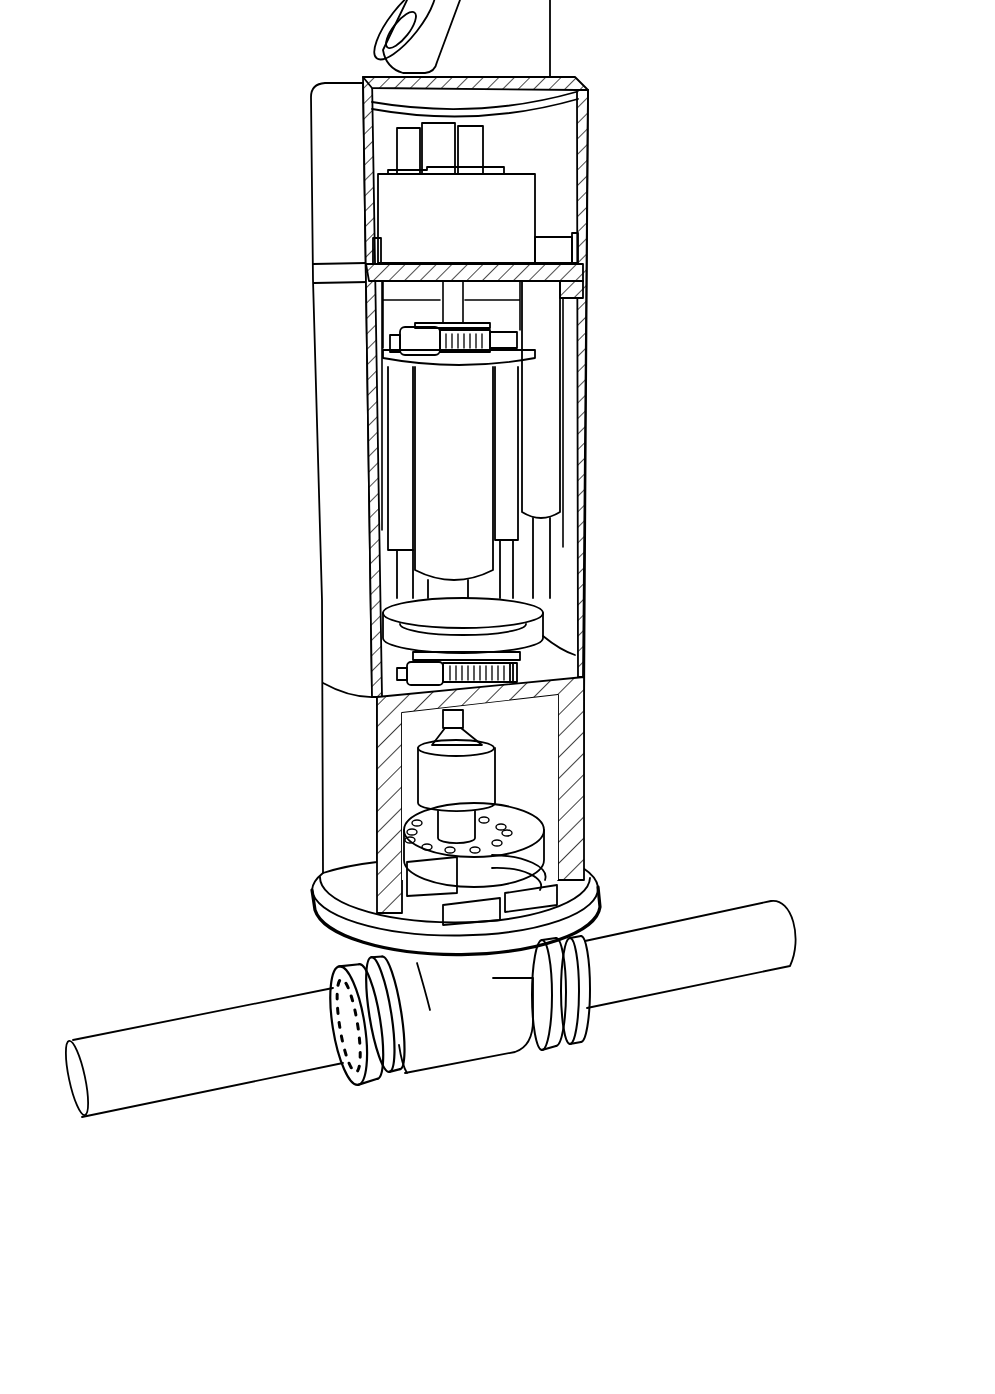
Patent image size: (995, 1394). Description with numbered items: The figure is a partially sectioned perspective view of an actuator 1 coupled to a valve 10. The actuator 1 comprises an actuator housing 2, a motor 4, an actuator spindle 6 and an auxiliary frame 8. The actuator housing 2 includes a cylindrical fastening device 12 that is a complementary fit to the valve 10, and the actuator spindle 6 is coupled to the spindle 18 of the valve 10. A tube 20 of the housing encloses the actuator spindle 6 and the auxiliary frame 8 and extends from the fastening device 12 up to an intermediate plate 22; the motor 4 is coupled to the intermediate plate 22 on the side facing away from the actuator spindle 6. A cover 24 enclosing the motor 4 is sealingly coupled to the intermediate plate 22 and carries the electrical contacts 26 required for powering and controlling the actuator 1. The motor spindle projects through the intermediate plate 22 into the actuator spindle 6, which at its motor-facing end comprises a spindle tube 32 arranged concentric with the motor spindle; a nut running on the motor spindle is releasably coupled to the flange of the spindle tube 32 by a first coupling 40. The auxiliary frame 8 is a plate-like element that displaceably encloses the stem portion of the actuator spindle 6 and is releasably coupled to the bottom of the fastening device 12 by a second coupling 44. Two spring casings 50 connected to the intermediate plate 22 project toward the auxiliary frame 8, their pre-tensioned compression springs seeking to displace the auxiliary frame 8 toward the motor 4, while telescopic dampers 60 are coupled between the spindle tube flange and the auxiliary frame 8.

The actuator 1 is at (287, 490).
The actuator housing 2 is at (605, 584).
The motor 4 is at (497, 212).
The actuator spindle 6 is at (487, 752).
The auxiliary frame 8 is at (517, 630).
The valve 10 is at (493, 980).
The cylindrical fastening device 12 is at (577, 706).
The spindle of the valve 18 is at (455, 822).
The tube 20 is at (583, 543).
The intermediate plate 22 is at (547, 263).
The cover 24 is at (588, 133).
The electrical contacts 26 is at (468, 43).
The spindle tube 32 is at (468, 473).
The first coupling 40 is at (497, 330).
The second coupling 44 is at (517, 650).
The spring casings 50 is at (550, 393).
The telescopic dampers 60 is at (507, 433).